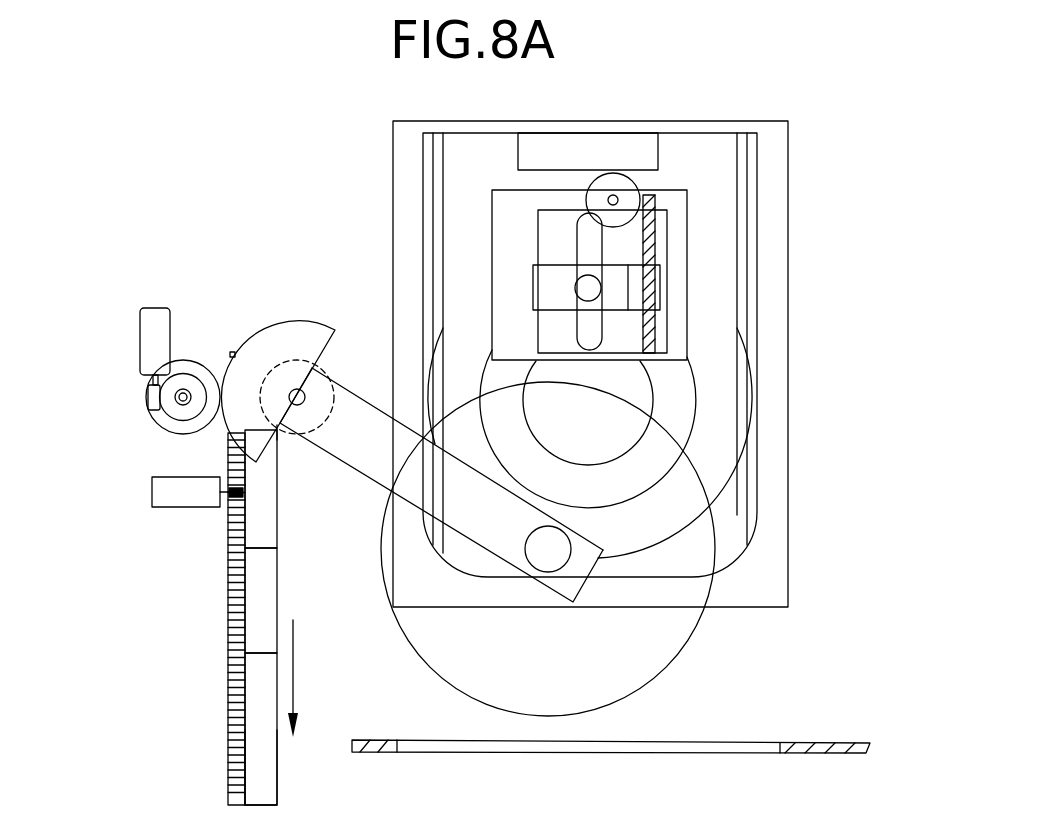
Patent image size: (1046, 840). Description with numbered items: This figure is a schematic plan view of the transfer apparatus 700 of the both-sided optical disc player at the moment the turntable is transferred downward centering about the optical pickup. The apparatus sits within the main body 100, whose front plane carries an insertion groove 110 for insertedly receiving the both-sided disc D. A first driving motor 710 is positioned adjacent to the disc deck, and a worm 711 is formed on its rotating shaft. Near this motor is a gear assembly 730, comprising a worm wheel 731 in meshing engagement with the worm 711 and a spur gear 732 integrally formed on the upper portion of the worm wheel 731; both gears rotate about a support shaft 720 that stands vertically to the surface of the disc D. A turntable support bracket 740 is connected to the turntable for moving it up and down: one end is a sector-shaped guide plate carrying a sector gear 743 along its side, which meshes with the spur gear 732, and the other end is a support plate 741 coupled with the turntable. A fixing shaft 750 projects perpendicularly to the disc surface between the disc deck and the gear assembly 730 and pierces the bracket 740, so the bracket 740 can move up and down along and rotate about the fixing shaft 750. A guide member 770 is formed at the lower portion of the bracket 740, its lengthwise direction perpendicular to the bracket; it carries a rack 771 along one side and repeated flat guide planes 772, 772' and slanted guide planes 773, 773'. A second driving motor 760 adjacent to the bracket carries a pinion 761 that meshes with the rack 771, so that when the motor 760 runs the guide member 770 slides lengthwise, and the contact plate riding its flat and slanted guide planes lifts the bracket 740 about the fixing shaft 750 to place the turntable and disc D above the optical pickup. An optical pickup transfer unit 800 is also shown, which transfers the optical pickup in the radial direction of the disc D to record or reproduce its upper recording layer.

The transfer apparatus 700 is at (240, 170).
The first driving motor 710 is at (128, 335).
The worm 711 is at (148, 397).
The support shaft 720 is at (188, 392).
The gear assembly 730 is at (164, 457).
The worm wheel 731 is at (180, 392).
The spur gear 732 is at (173, 422).
The turntable support bracket 740 is at (340, 481).
The support plate 741 is at (375, 423).
The sector gear 743 is at (273, 453).
The fixing shaft 750 is at (300, 390).
The second driving motor 760 is at (188, 497).
The pinion 761 is at (230, 517).
The guide member 770 is at (208, 778).
The rack 771 is at (228, 713).
The flat guide plane 772 is at (301, 785).
The flat guide plane 772' is at (326, 631).
The slanted guide plane 773 is at (333, 736).
The slanted guide plane 773' is at (314, 545).
The optical pickup transfer unit 800 is at (686, 172).
The both-sided disc D is at (673, 643).
The main body 100 is at (812, 753).
The insertion groove 110 is at (725, 750).